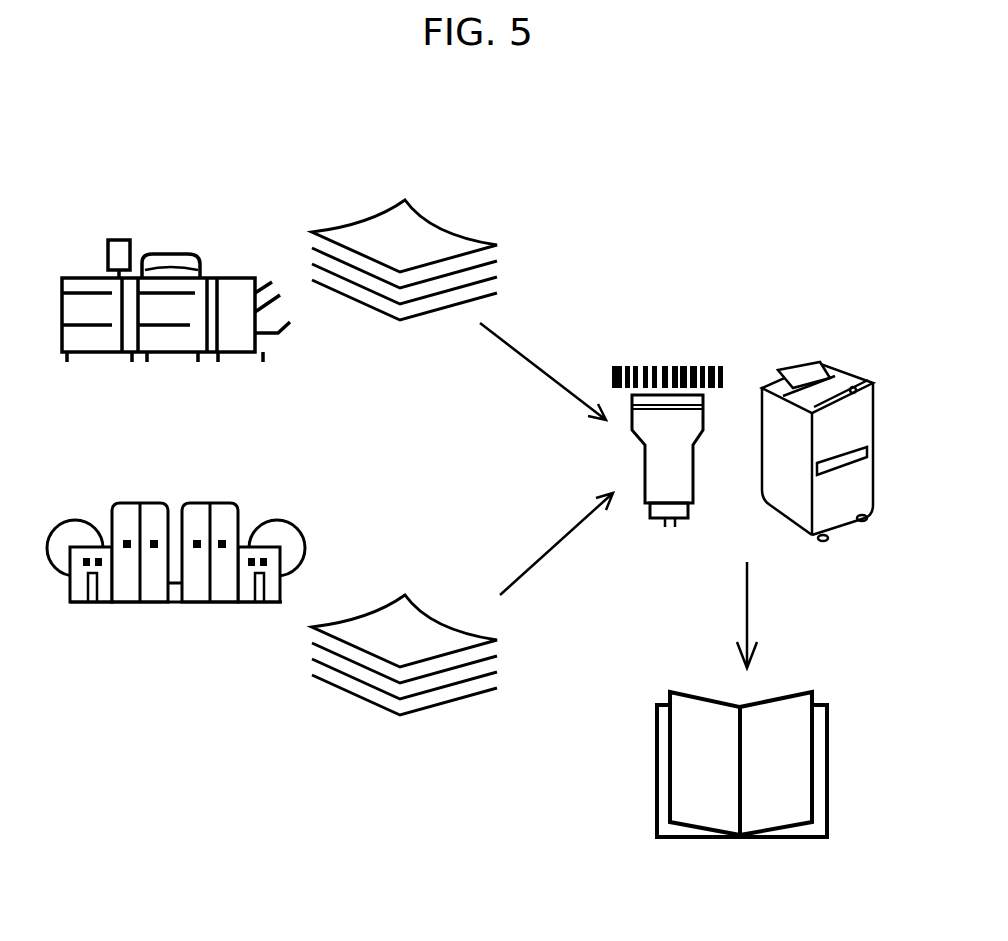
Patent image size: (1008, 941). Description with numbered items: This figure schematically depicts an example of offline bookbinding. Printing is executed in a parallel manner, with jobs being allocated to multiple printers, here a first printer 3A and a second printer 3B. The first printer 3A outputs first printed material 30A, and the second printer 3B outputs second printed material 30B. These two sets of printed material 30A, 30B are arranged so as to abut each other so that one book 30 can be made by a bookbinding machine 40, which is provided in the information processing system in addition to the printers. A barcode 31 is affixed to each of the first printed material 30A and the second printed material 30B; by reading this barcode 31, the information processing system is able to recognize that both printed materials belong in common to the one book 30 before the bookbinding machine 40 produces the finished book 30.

The first printer 3A is at (116, 240).
The second printer 3B is at (123, 502).
The first printed material 30A is at (443, 222).
The second printed material 30B is at (433, 613).
The barcode 31 is at (688, 372).
The bookbinding machine 40 is at (847, 378).
The book 30 is at (793, 840).